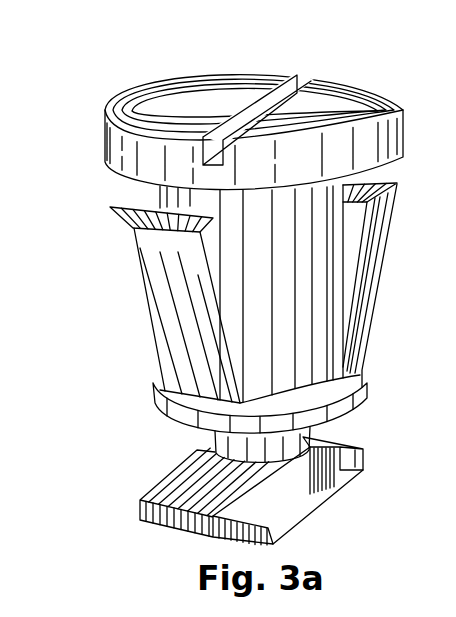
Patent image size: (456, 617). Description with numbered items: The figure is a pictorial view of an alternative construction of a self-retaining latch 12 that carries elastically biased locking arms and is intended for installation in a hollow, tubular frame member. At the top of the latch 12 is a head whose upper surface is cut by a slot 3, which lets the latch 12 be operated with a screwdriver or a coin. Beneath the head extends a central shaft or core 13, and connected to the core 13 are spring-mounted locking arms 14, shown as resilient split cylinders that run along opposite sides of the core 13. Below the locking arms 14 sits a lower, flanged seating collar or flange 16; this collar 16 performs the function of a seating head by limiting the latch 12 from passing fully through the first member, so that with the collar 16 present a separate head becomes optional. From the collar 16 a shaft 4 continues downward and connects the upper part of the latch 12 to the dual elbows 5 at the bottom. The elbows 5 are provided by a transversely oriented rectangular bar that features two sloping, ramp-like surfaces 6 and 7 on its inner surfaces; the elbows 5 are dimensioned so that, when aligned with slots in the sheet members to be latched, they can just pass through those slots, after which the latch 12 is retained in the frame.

The self-retaining latch 12 is at (130, 93).
The slot 3 is at (261, 110).
The central shaft or core 13 is at (300, 308).
The spring-mounted locking arms 14 is at (140, 239).
The seating collar or flange 16 is at (365, 388).
The shaft 4 is at (214, 434).
The sloping, ramp-like surface 7 is at (200, 484).
The sloping, ramp-like surface 6 is at (333, 447).
The dual elbows 5 is at (332, 473).